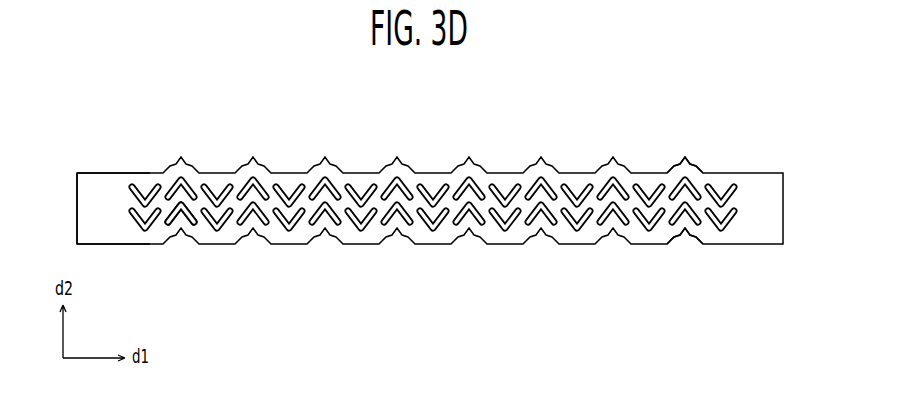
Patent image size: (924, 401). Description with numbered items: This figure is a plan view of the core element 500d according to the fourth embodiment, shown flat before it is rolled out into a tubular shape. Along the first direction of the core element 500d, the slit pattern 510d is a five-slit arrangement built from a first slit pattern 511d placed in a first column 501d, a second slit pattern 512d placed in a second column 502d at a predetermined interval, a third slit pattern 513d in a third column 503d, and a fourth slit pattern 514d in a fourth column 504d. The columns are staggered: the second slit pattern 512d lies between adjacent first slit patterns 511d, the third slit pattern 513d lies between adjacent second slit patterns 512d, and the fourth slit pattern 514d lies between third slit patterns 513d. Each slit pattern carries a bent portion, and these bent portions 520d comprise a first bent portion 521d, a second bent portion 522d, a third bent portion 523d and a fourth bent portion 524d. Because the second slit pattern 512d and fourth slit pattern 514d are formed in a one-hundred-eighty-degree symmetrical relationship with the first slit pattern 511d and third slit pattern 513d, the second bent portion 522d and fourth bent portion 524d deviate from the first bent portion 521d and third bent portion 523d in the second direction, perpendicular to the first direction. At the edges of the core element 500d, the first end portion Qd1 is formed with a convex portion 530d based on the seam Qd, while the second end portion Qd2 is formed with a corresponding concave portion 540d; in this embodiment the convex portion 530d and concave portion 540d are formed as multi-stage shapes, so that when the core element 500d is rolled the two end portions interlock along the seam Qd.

The core element 500d is at (416, 126).
The slit pattern 510d is at (156, 150).
The first slit pattern 511d is at (196, 183).
The second slit pattern 512d is at (137, 200).
The third slit pattern 513d is at (172, 211).
The fourth slit pattern 514d is at (113, 168).
The second pattern group 520d is at (248, 269).
The first bent portion 521d is at (183, 228).
The second bent portion 522d is at (217, 210).
The third bent portion 523d is at (253, 213).
The fourth bent portion 524d is at (305, 252).
The first column 501d is at (698, 184).
The second column 502d is at (735, 191).
The third column 503d is at (698, 210).
The fourth column 504d is at (738, 225).
The convex portion 530d is at (684, 159).
The concave portion 540d is at (696, 232).
The first end portion Qd1 is at (88, 172).
The second end portion Qd2 is at (88, 244).
The seam Qd is at (35, 260).